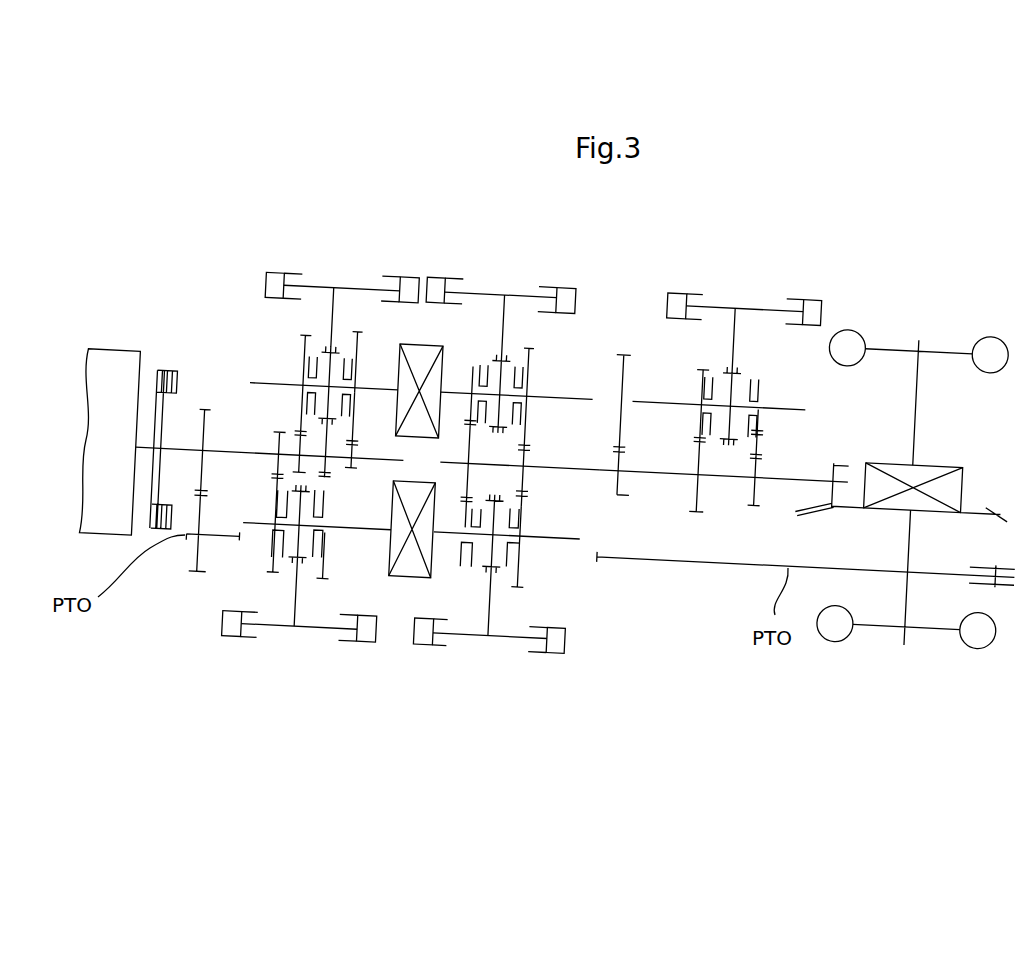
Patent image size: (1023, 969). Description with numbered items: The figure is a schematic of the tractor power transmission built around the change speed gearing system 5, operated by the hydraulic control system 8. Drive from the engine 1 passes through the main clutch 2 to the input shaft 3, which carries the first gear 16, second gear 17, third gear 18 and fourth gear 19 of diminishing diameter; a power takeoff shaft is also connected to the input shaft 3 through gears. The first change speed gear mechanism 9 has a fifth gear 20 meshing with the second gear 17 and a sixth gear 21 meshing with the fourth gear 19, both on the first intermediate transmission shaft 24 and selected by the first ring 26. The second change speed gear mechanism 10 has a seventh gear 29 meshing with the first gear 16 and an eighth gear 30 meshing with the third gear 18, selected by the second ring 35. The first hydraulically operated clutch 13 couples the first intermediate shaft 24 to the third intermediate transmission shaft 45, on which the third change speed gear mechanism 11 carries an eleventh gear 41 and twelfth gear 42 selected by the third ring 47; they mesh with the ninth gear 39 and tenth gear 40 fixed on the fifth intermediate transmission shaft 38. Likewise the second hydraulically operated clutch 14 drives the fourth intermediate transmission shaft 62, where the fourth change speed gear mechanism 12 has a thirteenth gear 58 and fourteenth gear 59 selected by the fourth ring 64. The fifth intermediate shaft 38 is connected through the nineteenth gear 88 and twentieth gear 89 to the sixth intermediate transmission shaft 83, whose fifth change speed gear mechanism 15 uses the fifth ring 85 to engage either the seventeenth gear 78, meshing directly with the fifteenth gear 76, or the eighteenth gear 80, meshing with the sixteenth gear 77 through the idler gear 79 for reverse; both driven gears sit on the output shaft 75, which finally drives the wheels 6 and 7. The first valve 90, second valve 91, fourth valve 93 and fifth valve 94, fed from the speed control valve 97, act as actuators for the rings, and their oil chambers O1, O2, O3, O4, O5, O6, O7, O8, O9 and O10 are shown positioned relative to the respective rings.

The engine 1 is at (108, 350).
The main clutch 2 is at (168, 368).
The input shaft 3 is at (187, 447).
The change speed gearing system 5 is at (208, 306).
The drive wheel 6 is at (968, 650).
The drive wheel 7 is at (990, 336).
The hydraulic control system 8 is at (430, 343).
The first change speed gear mechanism 9 is at (273, 345).
The second change speed gear mechanism 10 is at (250, 558).
The third change speed gear mechanism 11 is at (567, 352).
The fourth change speed gear mechanism 12 is at (555, 588).
The first hydraulically operated clutch 13 is at (407, 290).
The second hydraulically operated clutch 14 is at (403, 580).
The fifth change speed gear mechanism 15 is at (694, 368).
The first gear 16 is at (279, 430).
The second gear 17 is at (210, 450).
The third gear 18 is at (350, 440).
The fourth gear 19 is at (400, 462).
The fifth gear 20 is at (310, 335).
The sixth gear 21 is at (360, 333).
The first intermediate transmission shaft 24 is at (250, 383).
The first ring 26 is at (328, 347).
The seventh gear 29 is at (278, 572).
The eighth gear 30 is at (324, 580).
The second ring 35 is at (303, 624).
The fifth intermediate transmission shaft 38 is at (578, 475).
The ninth gear 39 is at (462, 440).
The tenth gear 40 is at (532, 448).
The eleventh gear 41 is at (470, 367).
The twelfth gear 42 is at (531, 352).
The third intermediate transmission shaft 45 is at (566, 398).
The third ring 47 is at (555, 285).
The thirteenth gear 58 is at (462, 560).
The fourteenth gear 59 is at (517, 588).
The fourth intermediate transmission shaft 62 is at (605, 562).
The fourth ring 64 is at (490, 572).
The output shaft 75 is at (673, 470).
The fifteenth gear 76 is at (700, 513).
The sixteenth gear 77 is at (757, 505).
The seventeenth gear 78 is at (737, 308).
The idler gear 79 is at (765, 450).
The eighteenth gear 80 is at (772, 388).
The sixth intermediate transmission shaft 83 is at (260, 521).
The fifth ring 85 is at (740, 372).
The nineteenth gear 88 is at (628, 352).
The twentieth gear 89 is at (628, 487).
The first valve 90 is at (296, 272).
The second valve 91 is at (245, 640).
The fourth valve 93 is at (440, 647).
The fifth valve 94 is at (800, 300).
The speed control valve 97 is at (552, 288).
The oil chamber O1 is at (265, 285).
The oil chamber O2 is at (400, 280).
The oil chamber O3 is at (225, 625).
The oil chamber O4 is at (365, 643).
The oil chamber O5 is at (580, 297).
The oil chamber O6 is at (440, 280).
The oil chamber O7 is at (567, 640).
The oil chamber O8 is at (423, 644).
The oil chamber O9 is at (820, 305).
The oil chamber O10 is at (680, 296).